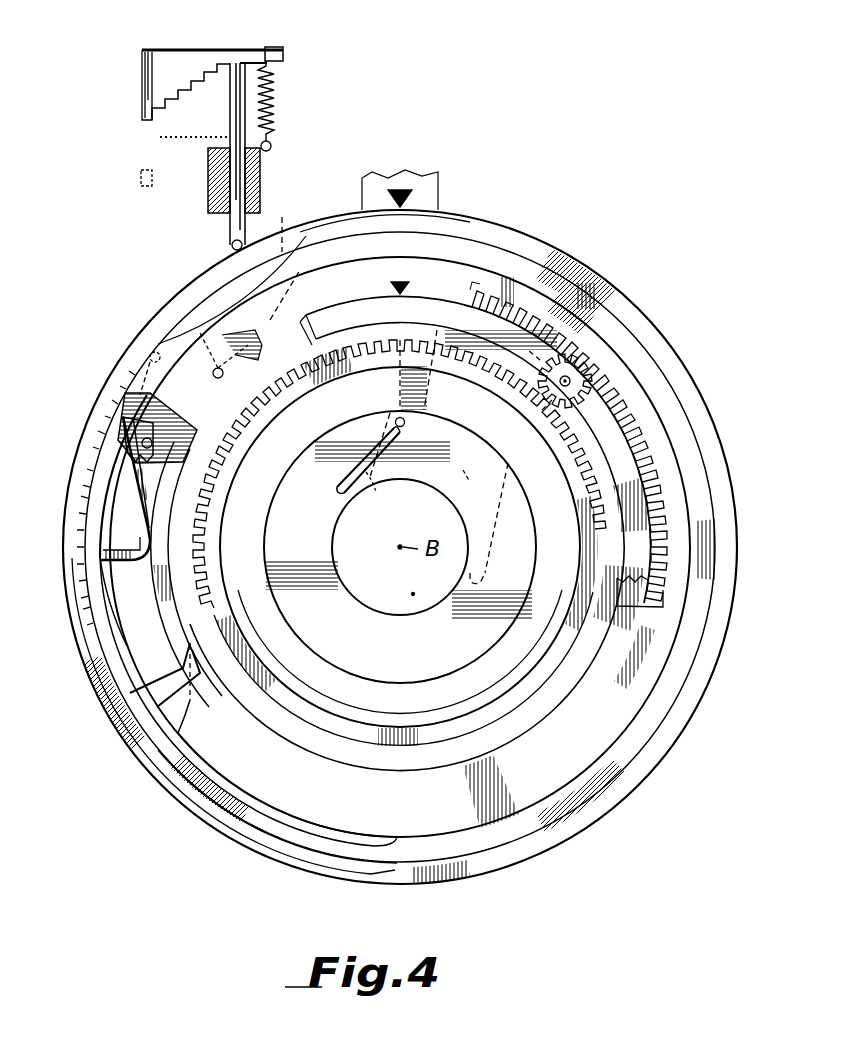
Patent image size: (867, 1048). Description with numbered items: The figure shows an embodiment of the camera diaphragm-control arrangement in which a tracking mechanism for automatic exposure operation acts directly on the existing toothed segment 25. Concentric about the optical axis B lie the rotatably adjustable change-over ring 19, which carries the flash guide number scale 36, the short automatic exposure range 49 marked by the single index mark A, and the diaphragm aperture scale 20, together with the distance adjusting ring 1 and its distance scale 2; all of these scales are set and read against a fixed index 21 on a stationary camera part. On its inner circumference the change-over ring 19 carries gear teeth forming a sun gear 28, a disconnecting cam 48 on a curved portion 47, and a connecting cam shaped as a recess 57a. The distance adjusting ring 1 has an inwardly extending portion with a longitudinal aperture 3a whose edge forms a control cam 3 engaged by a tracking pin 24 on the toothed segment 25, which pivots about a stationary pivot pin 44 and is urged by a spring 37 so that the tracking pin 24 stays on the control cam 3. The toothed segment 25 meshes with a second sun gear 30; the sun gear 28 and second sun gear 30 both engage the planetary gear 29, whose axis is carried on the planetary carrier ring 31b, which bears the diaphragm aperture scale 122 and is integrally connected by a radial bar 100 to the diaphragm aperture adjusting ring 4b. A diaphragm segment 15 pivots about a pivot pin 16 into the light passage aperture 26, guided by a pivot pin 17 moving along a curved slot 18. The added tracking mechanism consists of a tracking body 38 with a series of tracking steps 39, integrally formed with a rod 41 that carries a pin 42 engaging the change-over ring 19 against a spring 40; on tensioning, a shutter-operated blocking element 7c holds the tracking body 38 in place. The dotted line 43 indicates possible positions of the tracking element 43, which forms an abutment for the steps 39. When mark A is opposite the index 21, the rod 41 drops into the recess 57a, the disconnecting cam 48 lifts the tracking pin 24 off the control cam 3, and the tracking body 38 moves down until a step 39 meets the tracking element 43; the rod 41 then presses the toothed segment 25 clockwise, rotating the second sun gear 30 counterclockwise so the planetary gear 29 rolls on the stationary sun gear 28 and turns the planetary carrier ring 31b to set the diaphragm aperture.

The distance adjusting ring 1 is at (445, 237).
The distance scale 2 is at (205, 285).
The control cam 3 is at (154, 582).
The longitudinal aperture 3a is at (130, 666).
The diaphragm aperture adjusting ring 4b is at (395, 683).
The blocking element 7c is at (140, 176).
The diaphragm segment 15 is at (463, 500).
The pivot pin 16 is at (378, 487).
The pivot pin 17 is at (404, 427).
The curved slot 18 is at (362, 470).
The change-over ring 19 is at (532, 242).
The diaphragm aperture scale 20 is at (74, 516).
The fixed index 21 is at (400, 190).
The tracking pin 24 is at (148, 440).
The toothed segment 25 is at (262, 345).
The light passage aperture 26 is at (414, 597).
The sun gear 28 is at (548, 322).
The planetary gear 29 is at (590, 357).
The second sun gear 30 is at (205, 545).
The planetary carrier ring 31b is at (610, 430).
The flash guide number scale 36 is at (318, 222).
The spring 37 is at (212, 372).
The tracking body 38 is at (178, 58).
The tracking steps 39 is at (196, 93).
The spring 40 is at (272, 96).
The rod 41 is at (242, 185).
The pin 42 is at (229, 246).
The tracking element 43 is at (172, 138).
The stationary pivot pin 44 is at (150, 358).
The curved portion 47 is at (289, 836).
The disconnecting cam 48 is at (182, 733).
The automatic exposure range 49 is at (140, 345).
The recess 57a is at (58, 494).
The radial bar 100 is at (405, 391).
The diaphragm aperture scale 122 is at (332, 302).